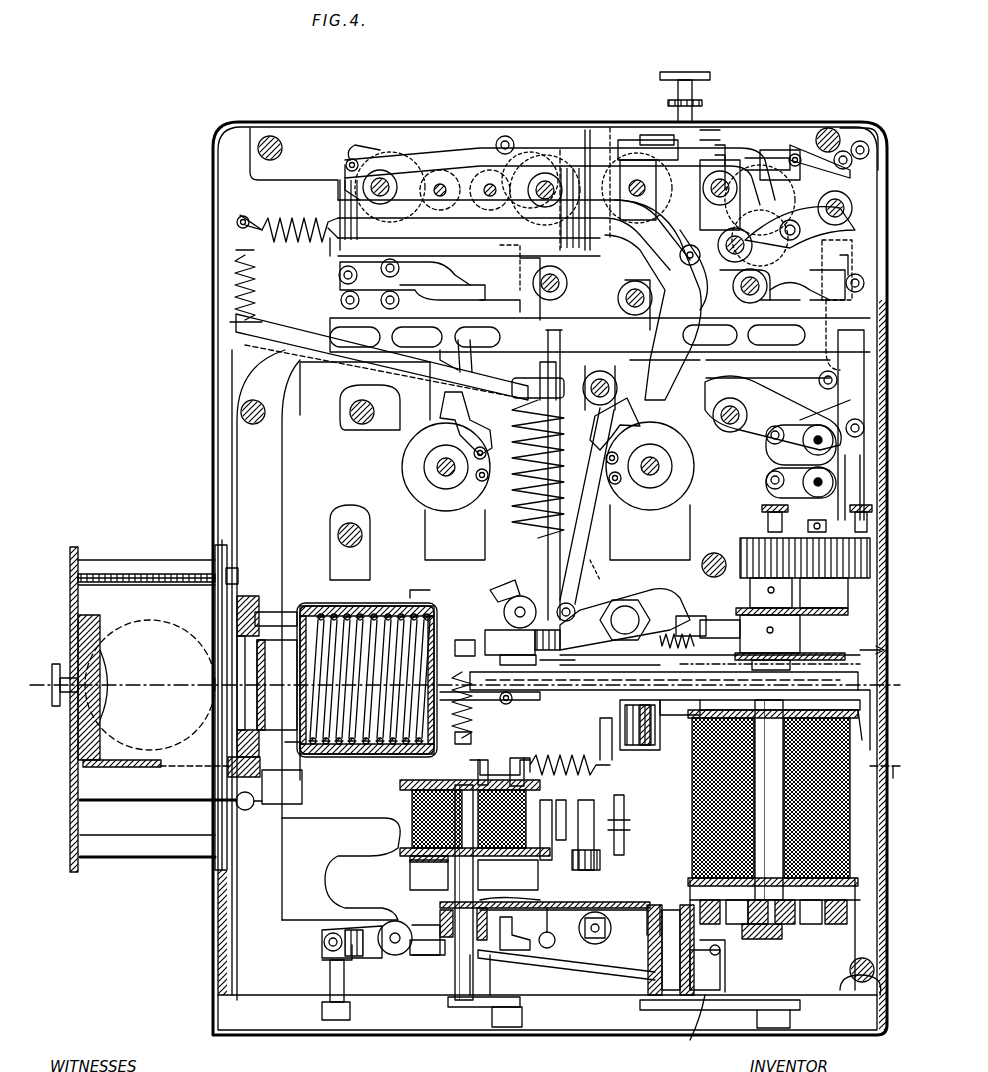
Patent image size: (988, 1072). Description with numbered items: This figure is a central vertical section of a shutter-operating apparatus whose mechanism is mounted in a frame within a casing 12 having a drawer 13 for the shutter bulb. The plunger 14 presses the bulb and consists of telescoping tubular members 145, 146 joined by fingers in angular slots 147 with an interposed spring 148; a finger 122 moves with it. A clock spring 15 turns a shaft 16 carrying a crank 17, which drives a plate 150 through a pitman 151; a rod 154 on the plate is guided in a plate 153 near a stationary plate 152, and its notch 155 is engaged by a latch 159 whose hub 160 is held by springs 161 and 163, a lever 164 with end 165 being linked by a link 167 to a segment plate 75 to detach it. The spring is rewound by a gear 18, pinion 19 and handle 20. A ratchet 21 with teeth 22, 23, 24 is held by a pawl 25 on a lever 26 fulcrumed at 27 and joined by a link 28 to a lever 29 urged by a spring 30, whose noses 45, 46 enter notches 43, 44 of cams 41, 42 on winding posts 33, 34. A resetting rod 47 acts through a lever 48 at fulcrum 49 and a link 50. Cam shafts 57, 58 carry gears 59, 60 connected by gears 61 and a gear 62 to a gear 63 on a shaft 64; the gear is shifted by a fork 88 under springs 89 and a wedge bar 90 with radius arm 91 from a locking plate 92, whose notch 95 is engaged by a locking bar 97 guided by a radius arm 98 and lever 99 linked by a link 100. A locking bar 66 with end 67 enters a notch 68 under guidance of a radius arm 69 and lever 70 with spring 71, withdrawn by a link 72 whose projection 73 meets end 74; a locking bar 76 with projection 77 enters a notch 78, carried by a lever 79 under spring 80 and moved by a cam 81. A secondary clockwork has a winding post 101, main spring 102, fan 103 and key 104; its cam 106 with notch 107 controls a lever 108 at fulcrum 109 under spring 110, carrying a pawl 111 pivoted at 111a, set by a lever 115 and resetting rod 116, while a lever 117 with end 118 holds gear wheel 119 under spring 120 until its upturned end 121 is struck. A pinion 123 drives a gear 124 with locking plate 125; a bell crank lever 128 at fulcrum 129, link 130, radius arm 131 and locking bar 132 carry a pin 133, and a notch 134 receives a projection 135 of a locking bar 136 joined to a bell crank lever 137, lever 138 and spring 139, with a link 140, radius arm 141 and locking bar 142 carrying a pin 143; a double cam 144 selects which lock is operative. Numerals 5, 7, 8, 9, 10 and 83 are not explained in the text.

The pin 5 is at (521, 762).
The knob 7 is at (50, 686).
The shaft 8 is at (70, 780).
The line 9 is at (885, 780).
The line 10 is at (788, 666).
The casing 12 is at (216, 192).
The drawer 13 is at (870, 655).
The plunger 14 is at (350, 598).
The clock spring 15 is at (830, 797).
The shaft 16 is at (784, 894).
The crank 17 is at (765, 828).
The gear 18 is at (846, 924).
The pinion 19 is at (652, 928).
The handle 20 is at (722, 1002).
The ratchet 21 is at (800, 640).
The tooth 22 is at (754, 667).
The tooth 23 is at (720, 620).
The tooth 24 is at (700, 616).
The spring-pressed pawl 25 is at (680, 626).
The lever 26 is at (640, 596).
The fulcrum 27 is at (612, 620).
The link 28 is at (566, 560).
The lever 29 is at (283, 372).
The spring 30 is at (515, 528).
The winding post 33 is at (436, 468).
The winding post 34 is at (660, 464).
The cam 41 is at (438, 512).
The cam 42 is at (692, 480).
The notch 43 is at (462, 430).
The notch 44 is at (630, 426).
The nose 45 is at (440, 408).
The nose 46 is at (640, 404).
The resetting rod 47 is at (686, 80).
The lever 48 is at (698, 270).
The fulcrum 49 is at (752, 238).
The link 50 is at (835, 270).
The shaft 57 is at (358, 162).
The shaft 58 is at (738, 160).
The gear 59 is at (386, 168).
The gear 60 is at (722, 186).
The gears 61 is at (460, 178).
The gear 62 is at (635, 150).
The gear 63 is at (588, 135).
The shaft 64 is at (545, 190).
The locking bar 66 is at (780, 148).
The end 67 is at (720, 150).
The notch 68 is at (712, 130).
The radius arm 69 is at (835, 150).
The lever 70 is at (862, 140).
The spring 71 is at (840, 160).
The link 72 is at (792, 251).
The projection 73 is at (843, 267).
The end 74 is at (800, 227).
The segment plate 75 is at (520, 170).
The locking bar 76 is at (610, 130).
The projection 77 is at (650, 162).
The notch 78 is at (690, 250).
The lever 79 is at (240, 340).
The spring 80 is at (232, 290).
The cam 81 is at (558, 150).
The pivot 83 is at (535, 278).
The sliding fork 88 is at (648, 135).
The springs 89 is at (655, 295).
The wedge bar 90 is at (665, 378).
The radius arm 91 is at (665, 367).
The locking plate 92 is at (492, 310).
The notch 95 is at (470, 254).
The locking bar 97 is at (435, 299).
The radius arm 98 is at (385, 302).
The lever 99 is at (342, 194).
The link 100 is at (440, 150).
The winding post 101 is at (444, 875).
The main spring 102 is at (540, 812).
The fan 103 is at (624, 848).
The winding key and indicator 104 is at (522, 1012).
The cam 106 is at (422, 948).
The notch 107 is at (510, 950).
The lever 108 is at (566, 944).
The fulcrum 109 is at (607, 928).
The spring 110 is at (540, 884).
The pawl 111 is at (722, 976).
The pivot 111a is at (699, 1025).
The lever 115 is at (370, 950).
The resetting rod 116 is at (344, 1012).
The lever 117 is at (496, 762).
The end 118 is at (545, 867).
The gear wheel 119 is at (608, 820).
The spring 120 is at (567, 754).
The upturned end 121 is at (493, 757).
The finger 122 is at (604, 740).
The pinion 123 is at (740, 550).
The gear 124 is at (795, 623).
The locking plate 125 is at (828, 590).
The bell crank lever 128 is at (720, 192).
The fulcrum 129 is at (746, 281).
The link 130 is at (847, 425).
The radius arm 131 is at (765, 410).
The locking bar 132 is at (860, 487).
The pin 133 is at (832, 525).
The notch 134 is at (837, 285).
The projection 135 is at (850, 335).
The locking bar 136 is at (768, 367).
The bell crank lever 137 is at (818, 418).
The lever 138 is at (683, 335).
The spring 139 is at (448, 482).
The link 140 is at (766, 458).
The radius arm 141 is at (801, 491).
The locking bar 142 is at (760, 508).
The pin 143 is at (768, 528).
The double cam 144 is at (508, 264).
The tubular member 145 is at (305, 760).
The tubular member 146 is at (426, 589).
The angular slots 147 is at (378, 760).
The spring 148 is at (342, 760).
The plate 150 is at (710, 663).
The pitman 151 is at (760, 704).
The stationary plate 152 is at (537, 663).
The plate 153 is at (522, 700).
The rod 154 is at (577, 663).
The notch 155 is at (478, 705).
The latch 159 is at (504, 610).
The hub 160 is at (462, 646).
The spring 161 is at (664, 683).
The spring 163 is at (482, 731).
The lever 164 is at (529, 475).
The end 165 is at (494, 592).
The link 167 is at (578, 572).